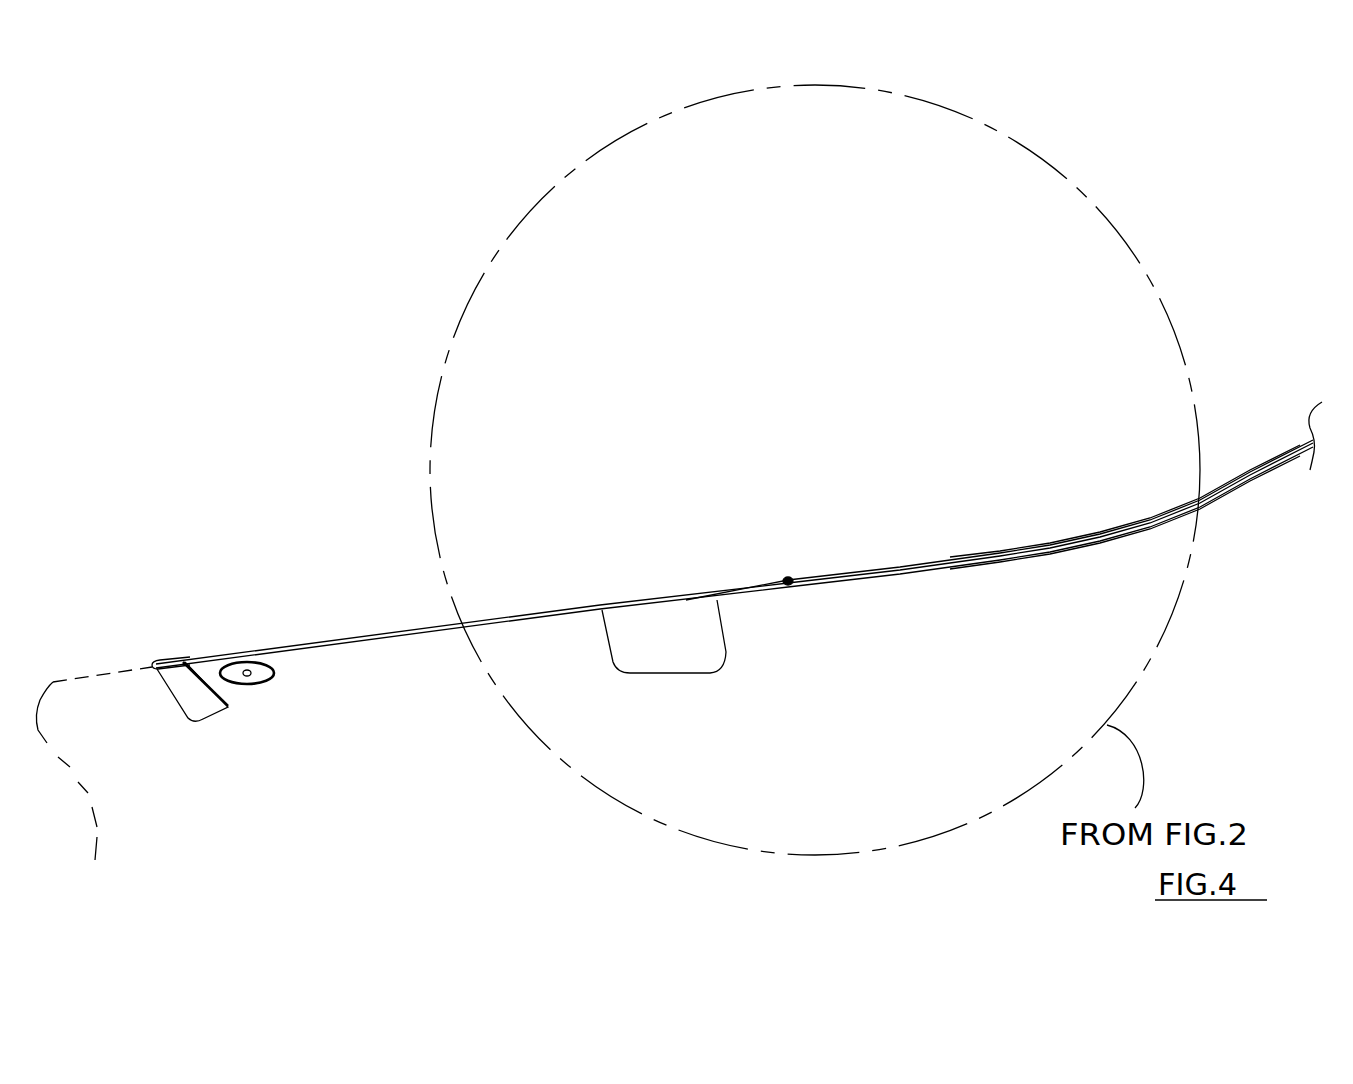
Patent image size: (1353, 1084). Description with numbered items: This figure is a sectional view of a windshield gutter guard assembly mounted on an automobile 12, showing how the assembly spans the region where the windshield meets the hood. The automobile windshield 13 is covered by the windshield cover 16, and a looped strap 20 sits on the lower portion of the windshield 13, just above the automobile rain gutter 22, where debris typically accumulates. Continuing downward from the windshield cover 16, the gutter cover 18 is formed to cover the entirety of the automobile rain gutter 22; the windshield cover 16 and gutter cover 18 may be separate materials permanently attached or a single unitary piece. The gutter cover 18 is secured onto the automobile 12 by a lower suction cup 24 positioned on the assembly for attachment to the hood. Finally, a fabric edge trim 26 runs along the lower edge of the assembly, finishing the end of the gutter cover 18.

The automobile 12 is at (230, 805).
The automobile windshield 13 is at (1043, 557).
The windshield cover 16 is at (1052, 548).
The gutter cover 18 is at (397, 627).
The looped strap 20 is at (783, 571).
The automobile rain gutter 22 is at (682, 640).
The lower suction cup 24 is at (273, 666).
The fabric edge trim 26 is at (168, 657).